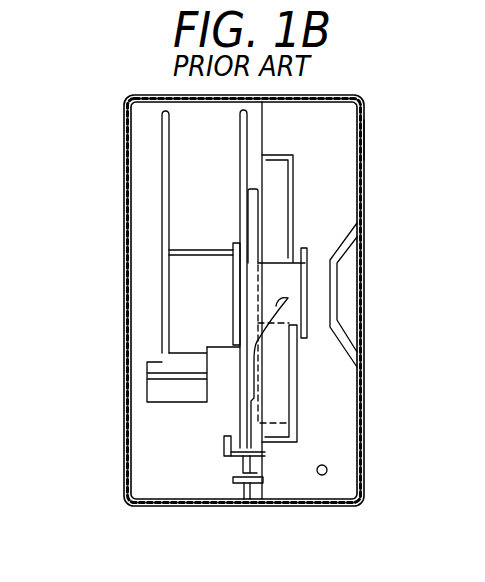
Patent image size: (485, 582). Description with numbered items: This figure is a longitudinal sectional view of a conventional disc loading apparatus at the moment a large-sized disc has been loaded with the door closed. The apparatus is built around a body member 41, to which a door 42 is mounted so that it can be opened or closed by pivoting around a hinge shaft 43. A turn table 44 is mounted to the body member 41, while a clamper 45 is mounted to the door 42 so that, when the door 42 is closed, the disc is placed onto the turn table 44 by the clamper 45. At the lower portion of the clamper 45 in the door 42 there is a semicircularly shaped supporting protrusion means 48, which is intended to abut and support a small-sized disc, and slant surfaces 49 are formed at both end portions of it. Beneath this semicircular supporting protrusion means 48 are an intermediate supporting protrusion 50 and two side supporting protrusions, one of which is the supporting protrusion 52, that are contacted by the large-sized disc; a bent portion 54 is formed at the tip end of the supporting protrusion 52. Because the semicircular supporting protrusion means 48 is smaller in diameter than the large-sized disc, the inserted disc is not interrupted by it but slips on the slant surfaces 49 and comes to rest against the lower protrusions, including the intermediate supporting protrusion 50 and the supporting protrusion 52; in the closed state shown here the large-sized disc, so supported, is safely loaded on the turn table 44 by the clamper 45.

The body member 41 is at (124, 140).
The door 42 is at (364, 137).
The hinge shaft 43 is at (321, 475).
The turn table 44 is at (237, 247).
The clamper 45 is at (288, 277).
The semicircularly shaped supporting protrusion means 48 is at (283, 395).
The slant surfaces 49 is at (288, 298).
The intermediate supporting protrusion 50 is at (245, 485).
The supporting protrusion 52 is at (227, 460).
The bent portion 54 is at (224, 440).